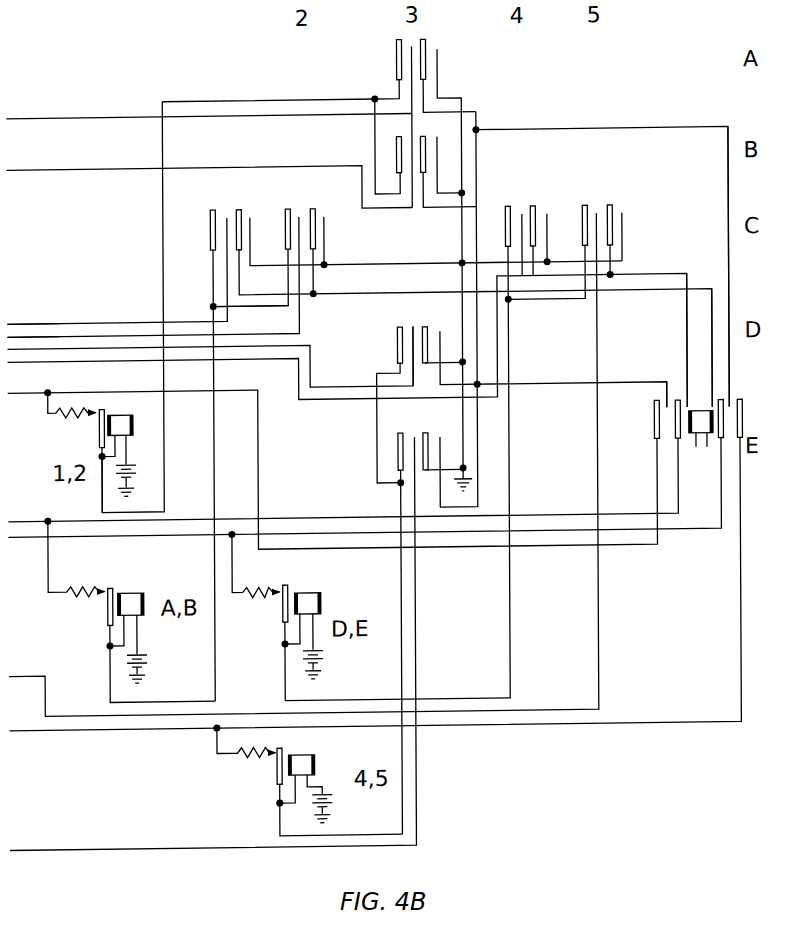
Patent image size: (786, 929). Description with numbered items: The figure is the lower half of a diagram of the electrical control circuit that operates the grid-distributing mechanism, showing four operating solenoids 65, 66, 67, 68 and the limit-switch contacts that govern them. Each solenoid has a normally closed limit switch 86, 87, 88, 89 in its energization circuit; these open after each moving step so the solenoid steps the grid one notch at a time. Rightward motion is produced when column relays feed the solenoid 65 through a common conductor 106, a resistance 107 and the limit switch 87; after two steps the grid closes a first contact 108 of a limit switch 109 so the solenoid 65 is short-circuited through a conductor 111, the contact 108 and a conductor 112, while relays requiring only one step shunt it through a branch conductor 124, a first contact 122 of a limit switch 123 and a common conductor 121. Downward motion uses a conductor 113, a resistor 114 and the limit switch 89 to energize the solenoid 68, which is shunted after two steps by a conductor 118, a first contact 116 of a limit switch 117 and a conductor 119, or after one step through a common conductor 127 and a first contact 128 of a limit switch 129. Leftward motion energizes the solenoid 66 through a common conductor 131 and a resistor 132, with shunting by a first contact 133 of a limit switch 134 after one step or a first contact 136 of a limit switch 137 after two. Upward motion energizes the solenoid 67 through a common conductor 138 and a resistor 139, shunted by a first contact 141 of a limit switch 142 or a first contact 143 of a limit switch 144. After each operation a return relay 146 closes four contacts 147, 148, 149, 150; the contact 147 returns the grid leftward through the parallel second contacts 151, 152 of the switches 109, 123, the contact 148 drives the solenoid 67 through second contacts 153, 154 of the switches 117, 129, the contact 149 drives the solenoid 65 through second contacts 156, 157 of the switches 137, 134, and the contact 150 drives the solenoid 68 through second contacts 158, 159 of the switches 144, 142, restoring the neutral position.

The solenoid 65 is at (140, 614).
The solenoid 66 is at (312, 594).
The operating solenoid 67 is at (306, 757).
The solenoid 68 is at (128, 436).
The limit switch 86 is at (276, 770).
The limit switch 87 is at (111, 589).
The limit switch 88 is at (286, 588).
The limit switch 89 is at (106, 407).
The common conductor 106 is at (24, 519).
The resistance 107 is at (80, 600).
The first contact 108 is at (226, 218).
The limit switch 109 is at (208, 232).
The conductor 111 is at (214, 440).
The conductor 112 is at (48, 322).
The conductor 113 is at (24, 390).
The resistor 114 is at (70, 420).
The first contact 116 is at (409, 46).
The limit switch 117 is at (443, 33).
The conductor 118 is at (164, 255).
The conductor 119 is at (38, 117).
The common conductor 121 is at (22, 334).
The first contact 122 is at (299, 218).
The limit switch 123 is at (314, 204).
The branch conductor 124 is at (234, 306).
The common conductor 127 is at (38, 168).
The first contact 128 is at (412, 147).
The limit switch 129 is at (449, 156).
The common conductor 131 is at (42, 540).
The resistor 132 is at (250, 599).
The first contact 133 is at (521, 214).
The limit switch 134 is at (534, 180).
The first contact 136 is at (598, 214).
The limit switch 137 is at (613, 198).
The common conductor 138 is at (45, 730).
The resistor 139 is at (240, 755).
The first contact 141 is at (412, 336).
The limit switch 142 is at (396, 339).
The first contact 143 is at (414, 445).
The limit switch 144 is at (396, 444).
The return relay 146 is at (691, 440).
The contact 147 is at (715, 400).
The second contact 148 is at (730, 400).
The third contact 149 is at (687, 400).
The fourth contact 150 is at (665, 400).
The second contact 151 is at (249, 218).
The second contact 152 is at (326, 221).
The second contact 153 is at (441, 52).
The second contact 154 is at (436, 152).
The second contact 156 is at (625, 220).
The second contact 157 is at (547, 214).
The second contact 158 is at (457, 421).
The second contact 159 is at (441, 338).